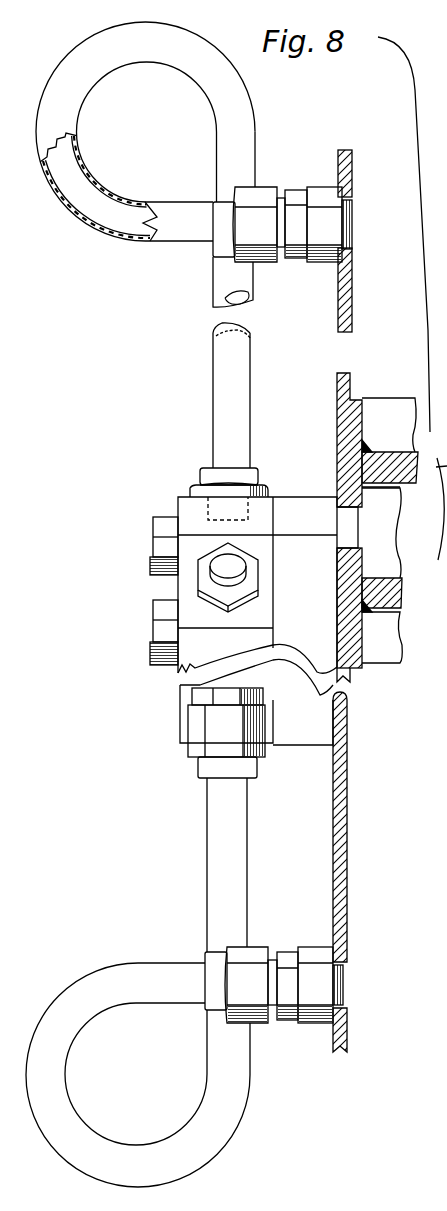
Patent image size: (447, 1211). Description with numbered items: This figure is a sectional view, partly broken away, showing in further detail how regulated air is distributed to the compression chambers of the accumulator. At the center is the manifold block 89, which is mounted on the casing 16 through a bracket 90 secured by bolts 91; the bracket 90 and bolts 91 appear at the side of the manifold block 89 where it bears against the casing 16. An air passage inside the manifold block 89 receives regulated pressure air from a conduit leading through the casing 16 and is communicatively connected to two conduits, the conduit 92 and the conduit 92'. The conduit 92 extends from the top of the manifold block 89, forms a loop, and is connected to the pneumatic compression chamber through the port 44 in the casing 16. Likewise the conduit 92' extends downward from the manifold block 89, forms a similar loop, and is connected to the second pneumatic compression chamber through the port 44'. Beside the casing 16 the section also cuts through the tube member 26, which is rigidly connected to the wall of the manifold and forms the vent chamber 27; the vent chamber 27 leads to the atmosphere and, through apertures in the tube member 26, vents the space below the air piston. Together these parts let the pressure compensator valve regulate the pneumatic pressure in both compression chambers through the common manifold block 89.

The casing 16 is at (345, 868).
The tube member 26 is at (383, 457).
The vent chamber 27 is at (398, 517).
The port 44 is at (307, 214).
The port 44' is at (305, 978).
The manifold block 89 is at (178, 495).
The bracket 90 is at (295, 512).
The bolts 91 is at (155, 545).
The conduit 92 is at (169, 245).
The conduit 92' is at (161, 937).